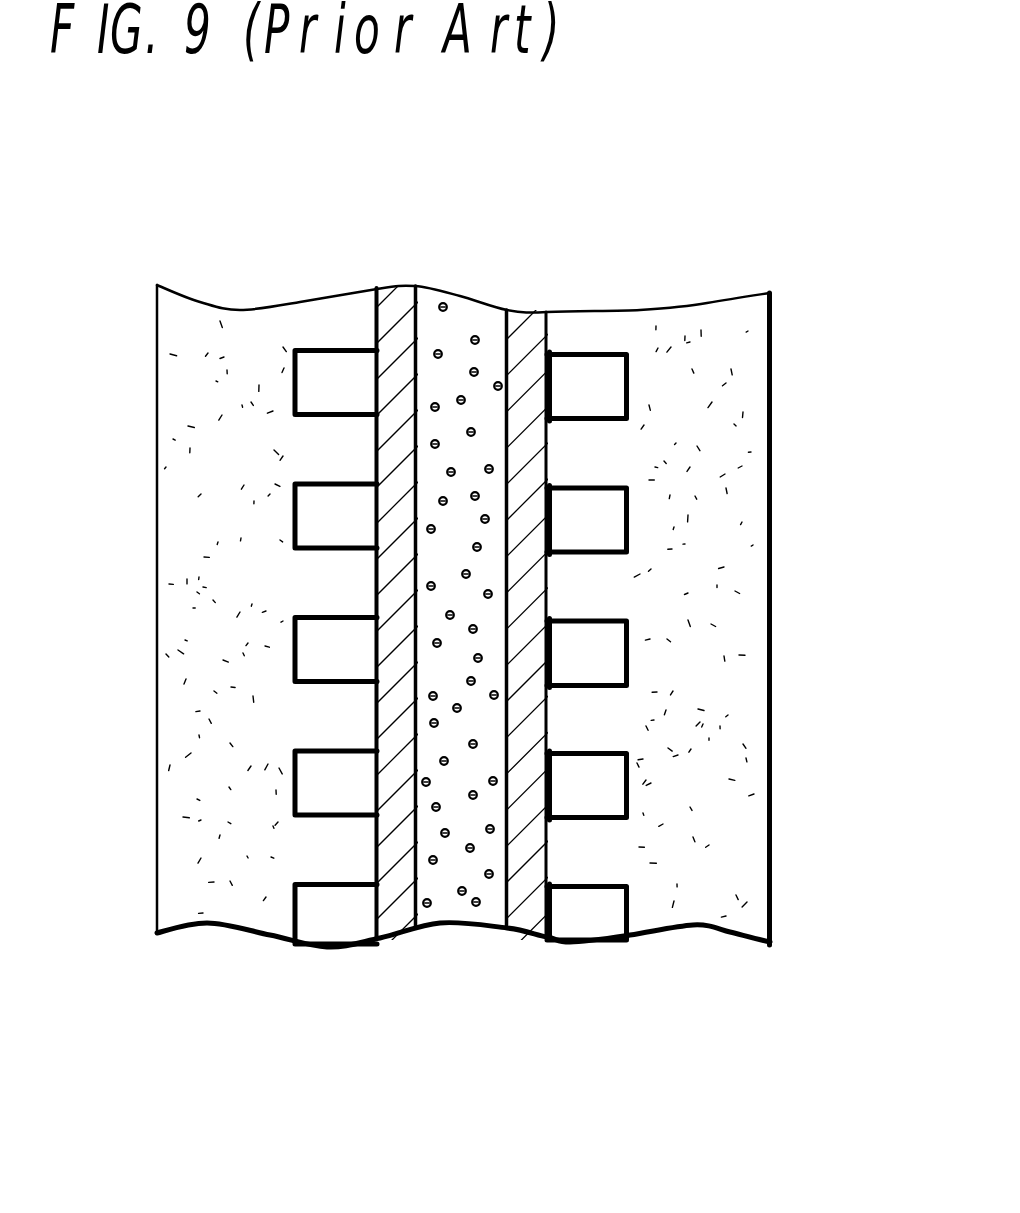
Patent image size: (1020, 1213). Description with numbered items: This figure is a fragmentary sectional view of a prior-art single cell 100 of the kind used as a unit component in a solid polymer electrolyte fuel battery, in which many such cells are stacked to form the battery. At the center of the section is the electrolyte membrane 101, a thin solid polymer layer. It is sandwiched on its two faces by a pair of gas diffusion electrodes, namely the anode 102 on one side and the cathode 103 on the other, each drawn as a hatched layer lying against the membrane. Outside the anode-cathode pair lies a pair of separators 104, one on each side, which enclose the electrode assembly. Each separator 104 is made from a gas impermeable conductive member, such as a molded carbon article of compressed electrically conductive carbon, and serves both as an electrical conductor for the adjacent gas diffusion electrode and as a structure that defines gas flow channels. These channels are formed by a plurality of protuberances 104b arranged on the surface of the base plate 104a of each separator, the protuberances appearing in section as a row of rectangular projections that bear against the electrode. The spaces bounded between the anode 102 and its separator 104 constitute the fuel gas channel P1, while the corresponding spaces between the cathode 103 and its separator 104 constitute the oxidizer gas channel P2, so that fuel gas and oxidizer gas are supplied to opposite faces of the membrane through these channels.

The single cell 100 is at (765, 247).
The electrolyte membrane 101 is at (478, 303).
The anode 102 is at (540, 310).
The cathode 103 is at (400, 288).
The separator 104 is at (240, 308).
The base plate 104a is at (203, 908).
The protuberances 104b is at (353, 753).
The fuel gas channel P1 is at (617, 520).
The oxidizer gas channel P2 is at (315, 383).